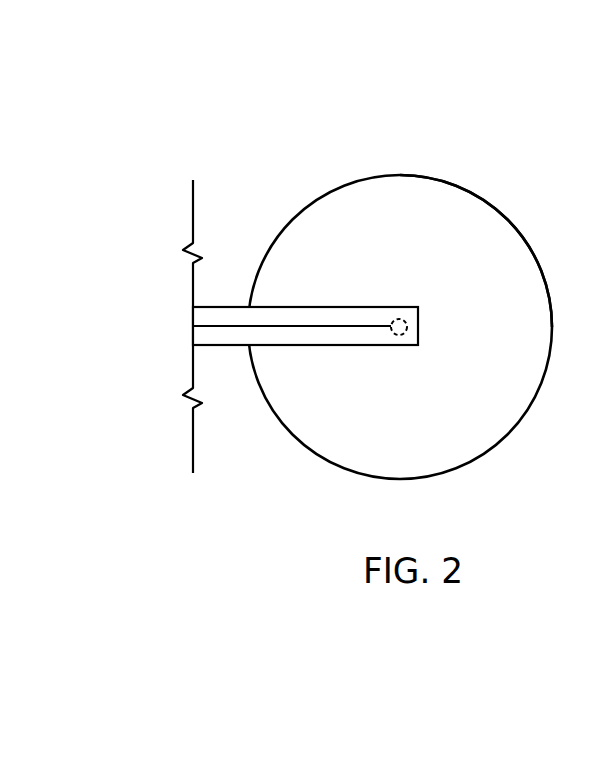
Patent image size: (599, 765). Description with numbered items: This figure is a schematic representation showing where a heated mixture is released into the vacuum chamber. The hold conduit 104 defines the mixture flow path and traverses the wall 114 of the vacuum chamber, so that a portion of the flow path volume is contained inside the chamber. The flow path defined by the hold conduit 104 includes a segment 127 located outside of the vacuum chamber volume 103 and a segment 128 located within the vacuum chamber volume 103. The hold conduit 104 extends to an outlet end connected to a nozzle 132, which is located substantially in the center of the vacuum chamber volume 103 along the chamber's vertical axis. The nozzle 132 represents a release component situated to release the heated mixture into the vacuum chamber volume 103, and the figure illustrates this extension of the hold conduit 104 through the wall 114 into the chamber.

The vacuum chamber volume 103 is at (420, 240).
The hold conduit 104 is at (283, 307).
The wall 114 is at (550, 309).
The segment 127 is at (217, 315).
The segment 128 is at (333, 337).
The nozzle 132 is at (408, 315).